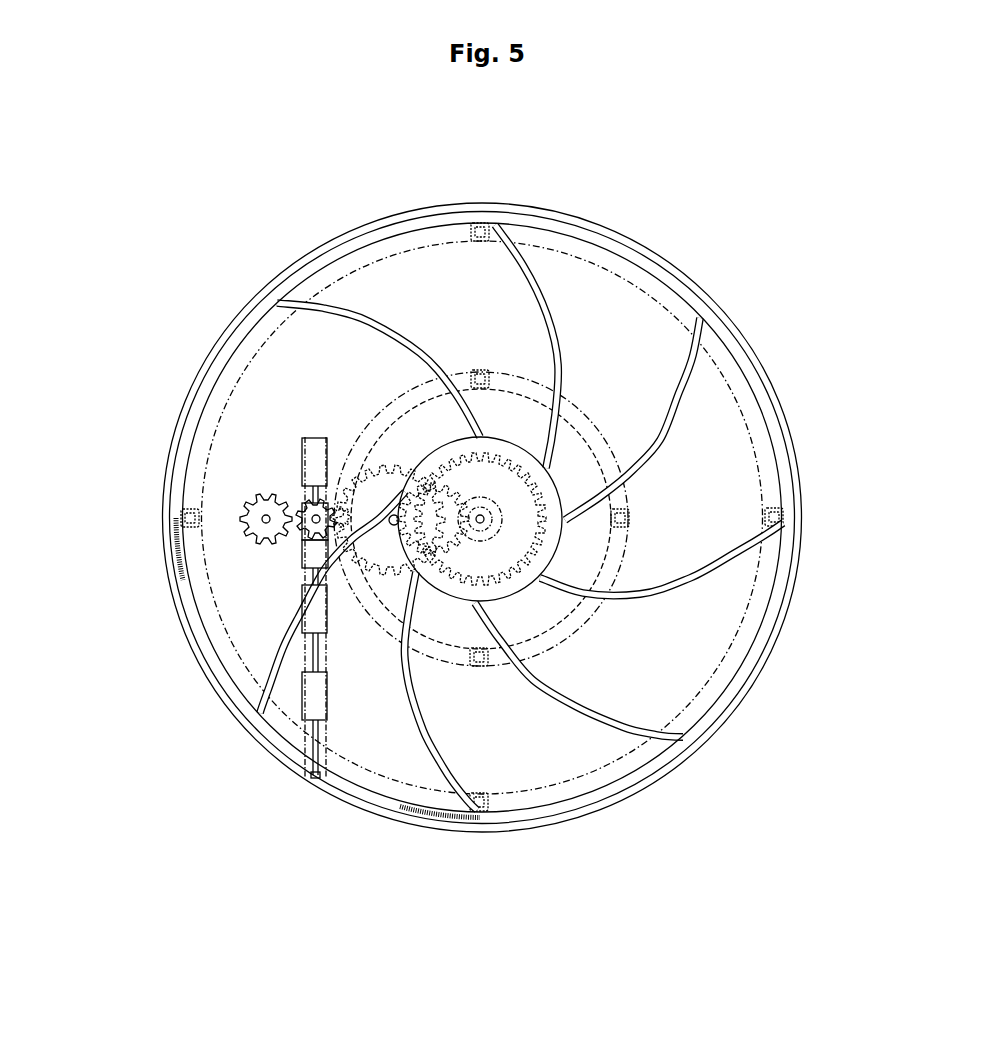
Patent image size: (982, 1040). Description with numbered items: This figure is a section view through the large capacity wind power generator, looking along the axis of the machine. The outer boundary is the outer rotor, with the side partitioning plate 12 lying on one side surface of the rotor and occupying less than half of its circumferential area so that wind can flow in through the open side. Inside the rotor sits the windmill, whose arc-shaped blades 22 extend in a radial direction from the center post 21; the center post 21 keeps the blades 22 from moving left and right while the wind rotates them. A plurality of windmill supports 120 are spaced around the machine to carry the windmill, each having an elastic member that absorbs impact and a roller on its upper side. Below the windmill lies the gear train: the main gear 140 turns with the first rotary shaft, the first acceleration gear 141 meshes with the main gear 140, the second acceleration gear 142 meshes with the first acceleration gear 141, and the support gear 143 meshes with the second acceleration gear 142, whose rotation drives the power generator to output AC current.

The side partitioning plate 12 is at (443, 822).
The center post 21 is at (553, 478).
The blades 22 is at (364, 316).
The windmill supports 120 is at (484, 226).
The main gear 140 is at (520, 587).
The first acceleration gear 141 is at (397, 577).
The second acceleration gear 142 is at (312, 542).
The support gear 143 is at (250, 548).